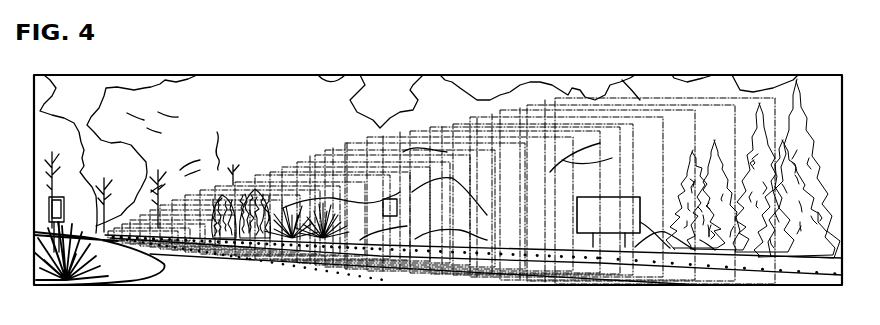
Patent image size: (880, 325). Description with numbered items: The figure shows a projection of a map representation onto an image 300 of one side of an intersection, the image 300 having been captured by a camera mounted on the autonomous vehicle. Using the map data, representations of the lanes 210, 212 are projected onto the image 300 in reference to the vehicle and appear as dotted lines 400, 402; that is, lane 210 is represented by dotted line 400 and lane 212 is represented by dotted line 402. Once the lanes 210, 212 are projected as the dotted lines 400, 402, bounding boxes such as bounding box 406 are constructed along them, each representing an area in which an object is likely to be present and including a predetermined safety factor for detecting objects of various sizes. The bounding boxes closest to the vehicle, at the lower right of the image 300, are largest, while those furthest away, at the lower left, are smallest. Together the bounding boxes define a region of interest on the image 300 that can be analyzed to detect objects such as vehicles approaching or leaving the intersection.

The image 300 is at (786, 73).
The bounding box 406 is at (636, 100).
The lane 212 is at (746, 276).
The dotted line 402 is at (803, 276).
The dotted line 400 is at (272, 263).
The lane 210 is at (399, 272).